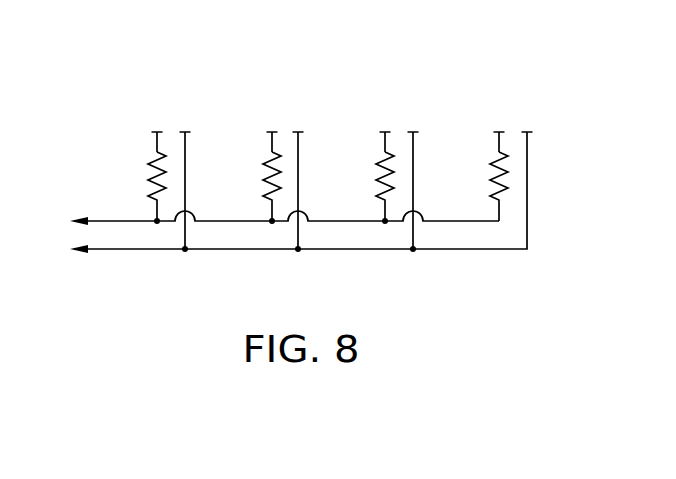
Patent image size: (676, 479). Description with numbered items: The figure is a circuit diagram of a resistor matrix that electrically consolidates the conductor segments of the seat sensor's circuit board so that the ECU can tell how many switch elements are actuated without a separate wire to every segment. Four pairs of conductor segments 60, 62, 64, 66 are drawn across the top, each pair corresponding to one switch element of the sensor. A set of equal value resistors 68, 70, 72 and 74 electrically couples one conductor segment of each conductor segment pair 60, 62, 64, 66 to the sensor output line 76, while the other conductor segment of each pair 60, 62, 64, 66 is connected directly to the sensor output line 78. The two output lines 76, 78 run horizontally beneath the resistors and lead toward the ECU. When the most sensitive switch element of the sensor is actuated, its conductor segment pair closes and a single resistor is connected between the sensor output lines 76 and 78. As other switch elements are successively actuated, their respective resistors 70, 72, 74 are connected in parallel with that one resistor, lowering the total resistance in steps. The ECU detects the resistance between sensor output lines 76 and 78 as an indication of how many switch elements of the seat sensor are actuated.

The conductor segment pair 60 is at (170, 106).
The conductor segment pair 62 is at (284, 106).
The conductor segment pair 64 is at (397, 106).
The conductor segment pair 66 is at (512, 106).
The resistor 68 is at (148, 168).
The resistor 70 is at (263, 168).
The resistor 72 is at (376, 168).
The resistor 74 is at (490, 168).
The sensor output line 76 is at (110, 219).
The sensor output line 78 is at (147, 250).